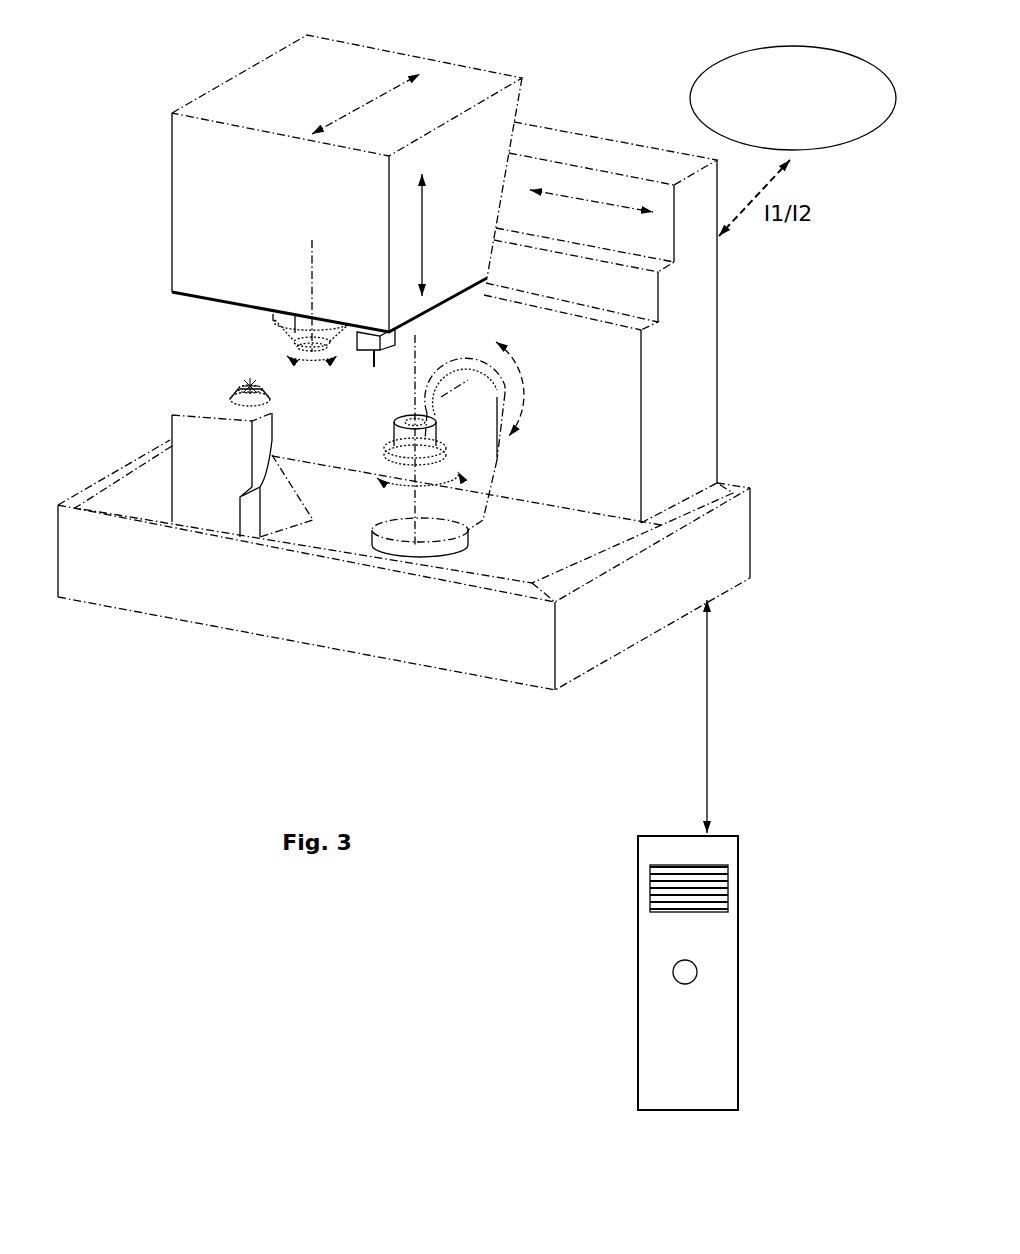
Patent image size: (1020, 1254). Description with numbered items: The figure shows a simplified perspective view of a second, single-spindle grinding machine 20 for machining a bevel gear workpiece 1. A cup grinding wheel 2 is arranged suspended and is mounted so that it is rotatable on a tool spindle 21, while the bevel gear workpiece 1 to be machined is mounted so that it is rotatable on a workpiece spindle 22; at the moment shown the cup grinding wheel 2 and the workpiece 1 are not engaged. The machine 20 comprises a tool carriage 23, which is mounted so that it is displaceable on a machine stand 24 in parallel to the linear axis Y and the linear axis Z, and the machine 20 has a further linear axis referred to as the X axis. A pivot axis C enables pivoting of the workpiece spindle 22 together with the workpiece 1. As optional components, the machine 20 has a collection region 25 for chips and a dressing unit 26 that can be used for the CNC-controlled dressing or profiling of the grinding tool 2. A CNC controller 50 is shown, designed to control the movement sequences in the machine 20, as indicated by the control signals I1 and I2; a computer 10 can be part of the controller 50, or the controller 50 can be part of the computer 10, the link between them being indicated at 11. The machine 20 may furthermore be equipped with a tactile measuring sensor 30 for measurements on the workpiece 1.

The bevel gear workpiece 1 is at (437, 428).
The cup grinding wheel 2 is at (298, 345).
The computer 10 is at (682, 1098).
The communication link 11 is at (707, 677).
The grinding machine 20 is at (586, 27).
The tool spindle 21 is at (273, 318).
The workpiece spindle 22 is at (403, 440).
The tool carriage 23 is at (248, 97).
The machine stand 24 is at (685, 307).
The collection region 25 is at (560, 551).
The dressing unit 26 is at (224, 393).
The tactile measuring sensor 30 is at (373, 381).
The CNC controller 50 is at (781, 107).